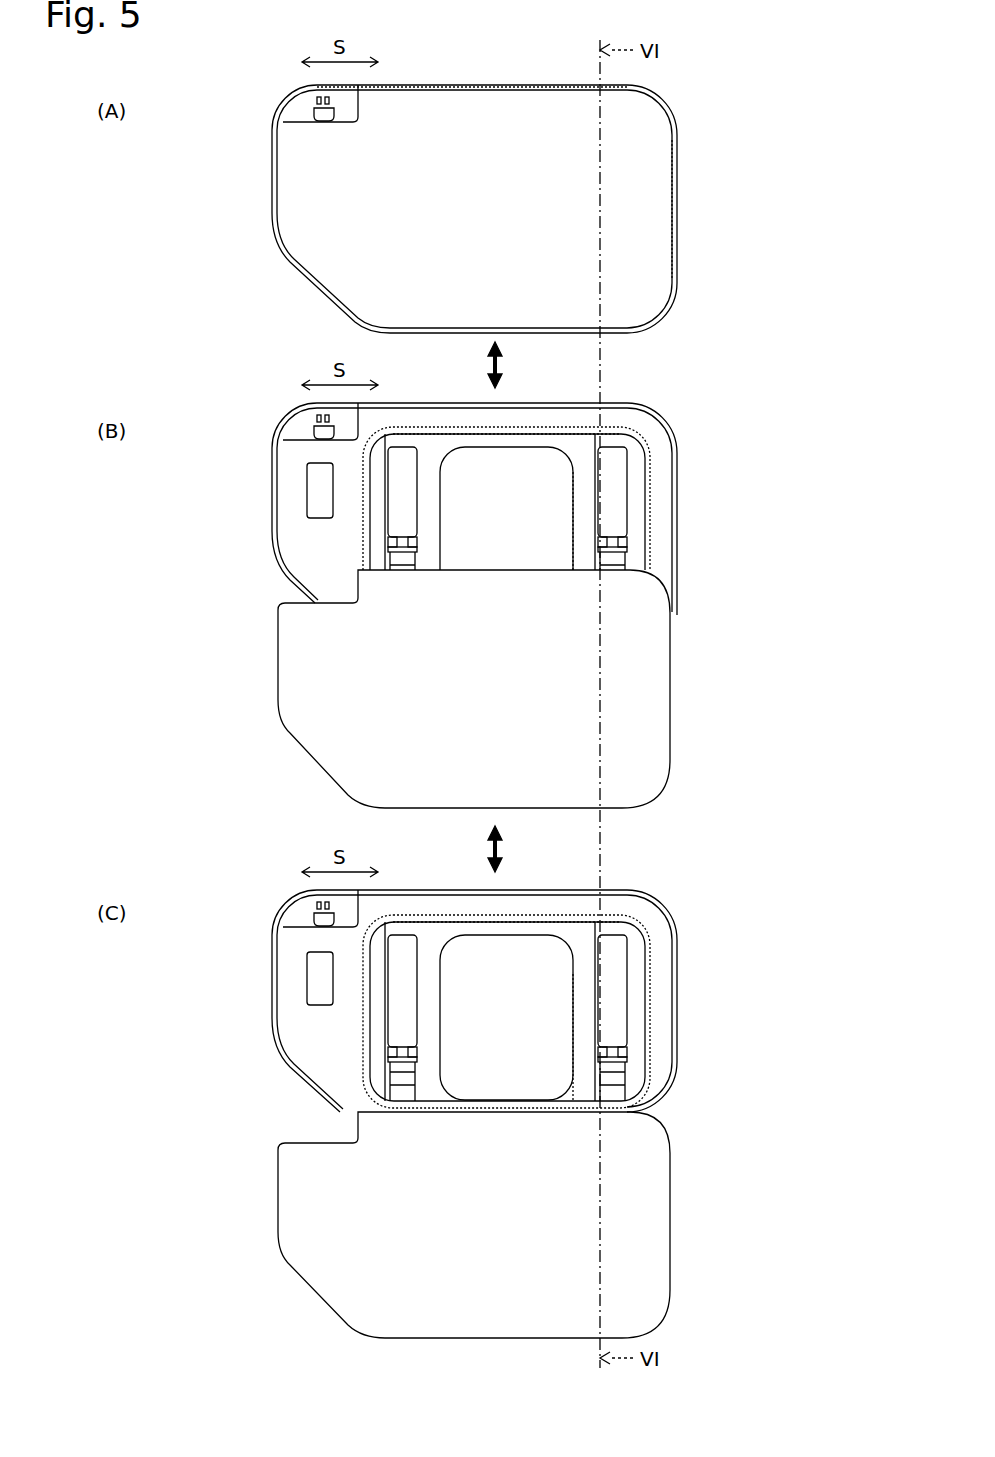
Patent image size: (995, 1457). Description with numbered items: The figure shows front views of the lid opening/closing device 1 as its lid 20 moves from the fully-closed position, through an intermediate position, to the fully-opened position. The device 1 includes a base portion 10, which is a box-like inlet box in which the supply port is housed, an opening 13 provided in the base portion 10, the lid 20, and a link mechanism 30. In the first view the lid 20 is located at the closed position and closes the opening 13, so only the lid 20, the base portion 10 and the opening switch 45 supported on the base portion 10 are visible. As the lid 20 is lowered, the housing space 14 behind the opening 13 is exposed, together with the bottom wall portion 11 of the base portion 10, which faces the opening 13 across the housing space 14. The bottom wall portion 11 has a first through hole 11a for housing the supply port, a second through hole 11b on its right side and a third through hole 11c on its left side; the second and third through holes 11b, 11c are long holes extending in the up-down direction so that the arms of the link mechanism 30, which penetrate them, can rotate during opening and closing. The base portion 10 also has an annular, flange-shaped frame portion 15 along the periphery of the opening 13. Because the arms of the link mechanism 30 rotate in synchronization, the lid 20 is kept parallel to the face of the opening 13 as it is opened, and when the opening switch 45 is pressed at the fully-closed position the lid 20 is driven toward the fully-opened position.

The lid opening/closing device 1 is at (697, 113).
The base portion 10 is at (270, 200).
The bottom wall portion 11 is at (433, 458).
The first through hole 11a is at (443, 467).
The second through hole 11b is at (608, 537).
The third through hole 11c is at (403, 485).
The opening 13 is at (542, 87).
The housing space 14 is at (580, 456).
The frame portion 15 is at (297, 472).
The lid 20 is at (640, 183).
The link mechanism 30 is at (662, 538).
The opening switch 45 is at (303, 108).